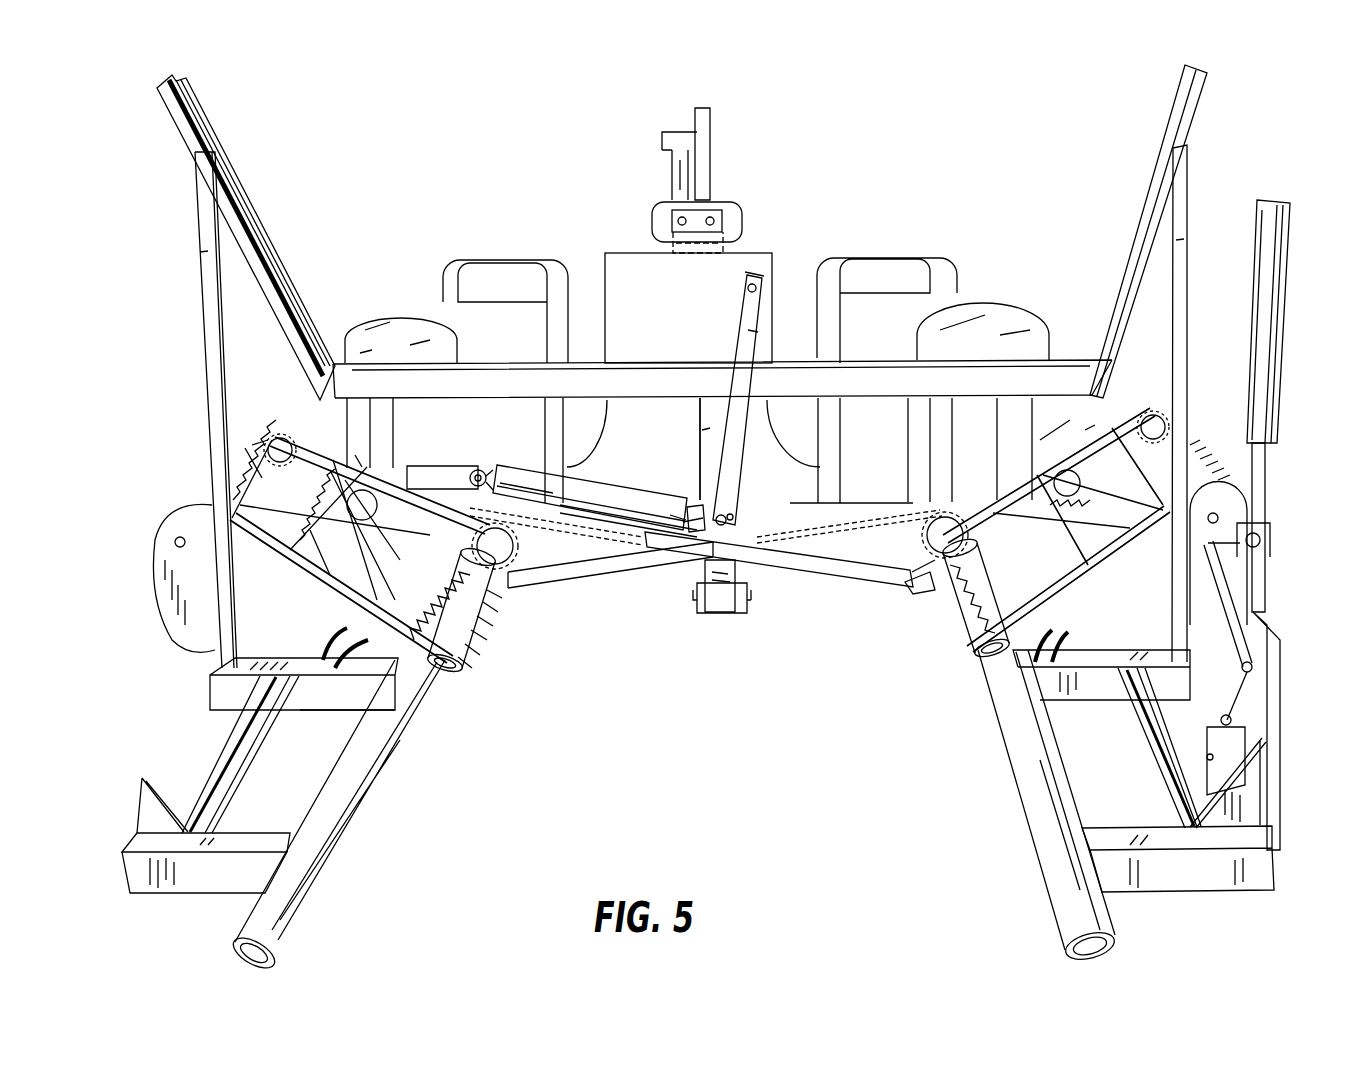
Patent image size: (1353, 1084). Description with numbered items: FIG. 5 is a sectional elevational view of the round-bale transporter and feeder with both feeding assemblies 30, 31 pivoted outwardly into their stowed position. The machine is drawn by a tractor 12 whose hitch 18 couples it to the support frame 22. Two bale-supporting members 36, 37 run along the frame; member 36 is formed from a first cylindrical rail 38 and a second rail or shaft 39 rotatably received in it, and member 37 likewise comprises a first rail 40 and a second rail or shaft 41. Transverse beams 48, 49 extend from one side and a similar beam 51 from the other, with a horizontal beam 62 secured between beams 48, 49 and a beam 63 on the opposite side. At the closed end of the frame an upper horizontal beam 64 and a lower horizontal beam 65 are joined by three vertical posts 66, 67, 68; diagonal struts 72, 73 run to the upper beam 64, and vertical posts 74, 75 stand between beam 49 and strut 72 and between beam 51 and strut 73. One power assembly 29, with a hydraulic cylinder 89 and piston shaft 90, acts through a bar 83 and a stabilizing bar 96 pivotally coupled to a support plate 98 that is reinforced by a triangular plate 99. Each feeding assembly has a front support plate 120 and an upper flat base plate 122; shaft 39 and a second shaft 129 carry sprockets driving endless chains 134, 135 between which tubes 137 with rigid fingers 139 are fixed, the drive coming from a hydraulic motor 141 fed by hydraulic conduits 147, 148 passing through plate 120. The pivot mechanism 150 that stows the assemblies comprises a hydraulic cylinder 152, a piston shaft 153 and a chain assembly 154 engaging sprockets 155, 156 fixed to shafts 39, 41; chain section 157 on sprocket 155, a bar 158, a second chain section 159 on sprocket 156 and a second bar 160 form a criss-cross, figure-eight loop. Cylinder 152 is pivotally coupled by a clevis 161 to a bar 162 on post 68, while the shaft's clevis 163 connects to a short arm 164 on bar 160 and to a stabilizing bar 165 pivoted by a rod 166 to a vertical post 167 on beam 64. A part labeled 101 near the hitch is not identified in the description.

The tractor 12 is at (748, 213).
The hitch 18 is at (740, 613).
The support frame 22 is at (1062, 358).
The power assembly 29 is at (1245, 268).
The feeding assembly 30 is at (448, 672).
The feeding assembly 31 is at (955, 667).
The bale-supporting member 36 is at (350, 840).
The bale-supporting member 37 is at (1018, 840).
The first cylindrical rail 38 is at (376, 787).
The second cylindrical rail or shaft 39 is at (470, 630).
The first rail 40 is at (1015, 765).
The second rail or shaft 41 is at (968, 636).
The transverse beam 48 is at (215, 888).
The transverse beam 49 is at (347, 712).
The transverse beam 51 is at (1100, 698).
The horizontal beam 62 is at (225, 746).
The horizontal beam 63 is at (1152, 755).
The upper horizontal beam 64 is at (910, 400).
The lower horizontal beam 65 is at (802, 503).
The vertical post 66 is at (1040, 440).
The vertical post 67 is at (705, 437).
The vertical post 68 is at (405, 445).
The diagonal strut 72 is at (252, 200).
The diagonal strut 73 is at (1172, 107).
The vertical post 74 is at (205, 328).
The vertical post 75 is at (1187, 330).
The bar 83 is at (1266, 582).
The hydraulic cylinder 89 is at (1279, 330).
The hydraulic piston shaft 90 is at (1270, 477).
The stabilizing bar 96 is at (1240, 648).
The support plate 98 is at (1276, 636).
The triangular plate 99 is at (150, 778).
The tongue 101 is at (703, 572).
The front support plate 120 is at (178, 620).
The upper flat base plate 122 is at (303, 510).
The second shaft 129 is at (256, 444).
The endless chain 134 is at (312, 578).
The endless chain 135 is at (344, 440).
The tubes 137 is at (465, 656).
The rigid fingers 139 is at (488, 603).
The hydraulic motor 141 is at (380, 488).
The hydraulic conduit 147 is at (333, 640).
The hydraulic conduit 148 is at (353, 690).
The pivot mechanism 150 is at (860, 590).
The hydraulic cylinder 152 is at (628, 462).
The hydraulic piston shaft 153 is at (695, 505).
The chain assembly 154 is at (920, 592).
The sprocket 155 is at (508, 537).
The sprocket 156 is at (914, 538).
The chain section 157 is at (595, 498).
The bar 158 is at (780, 567).
The second chain section 159 is at (955, 600).
The second bar 160 is at (580, 578).
The clevis 161 is at (486, 474).
The bar 162 is at (455, 470).
The clevis 163 is at (735, 518).
The short arm 164 is at (680, 522).
The stabilizing bar 165 is at (737, 462).
The rod 166 is at (748, 290).
The vertical post 167 is at (760, 277).